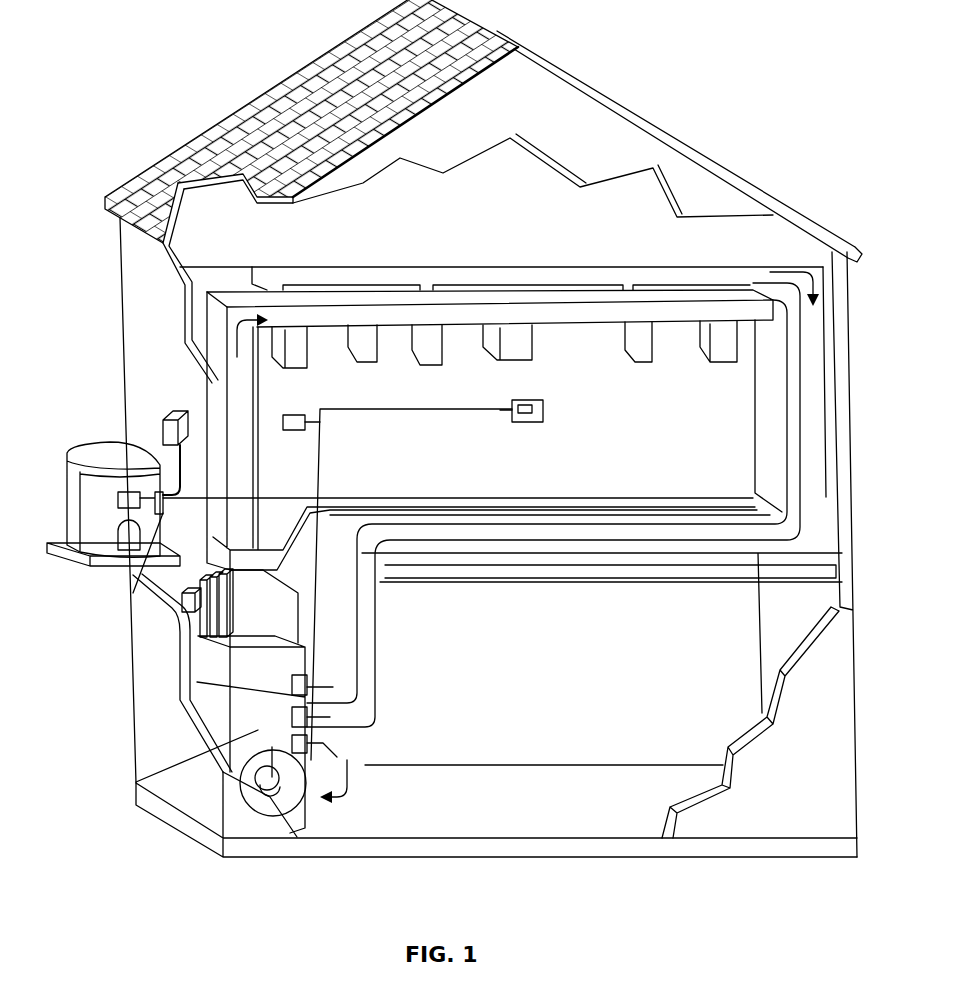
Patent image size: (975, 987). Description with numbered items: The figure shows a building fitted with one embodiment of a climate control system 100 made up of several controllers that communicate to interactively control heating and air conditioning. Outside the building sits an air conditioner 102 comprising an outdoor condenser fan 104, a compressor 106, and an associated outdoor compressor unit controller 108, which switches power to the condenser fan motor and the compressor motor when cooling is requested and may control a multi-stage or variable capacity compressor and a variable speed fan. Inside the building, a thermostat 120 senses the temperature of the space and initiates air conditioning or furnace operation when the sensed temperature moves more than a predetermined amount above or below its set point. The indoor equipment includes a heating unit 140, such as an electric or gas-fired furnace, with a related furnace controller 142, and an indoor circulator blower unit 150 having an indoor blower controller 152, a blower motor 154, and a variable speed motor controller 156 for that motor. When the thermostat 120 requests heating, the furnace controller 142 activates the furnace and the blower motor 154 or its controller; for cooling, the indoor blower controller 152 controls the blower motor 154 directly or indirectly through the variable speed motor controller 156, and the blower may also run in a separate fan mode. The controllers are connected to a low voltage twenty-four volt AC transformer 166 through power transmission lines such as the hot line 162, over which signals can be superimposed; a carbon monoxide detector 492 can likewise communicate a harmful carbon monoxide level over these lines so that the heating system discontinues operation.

The climate control system 100 is at (113, 76).
The air conditioner 102 is at (100, 455).
The outdoor condenser fan 104 is at (117, 494).
The compressor 106 is at (123, 533).
The outdoor compressor unit controller 108 is at (132, 591).
The thermostat 120 is at (543, 411).
The heating unit 140 is at (137, 782).
The furnace controller 142 is at (255, 742).
The indoor circulator blower unit 150 is at (213, 678).
The indoor blower controller 152 is at (230, 700).
The blower motor 154 is at (274, 752).
The variable speed motor controller 156 is at (303, 745).
The hot power transmission line 162 is at (443, 410).
The 24 volt AC transformer 166 is at (293, 497).
The carbon monoxide detector 492 is at (283, 418).